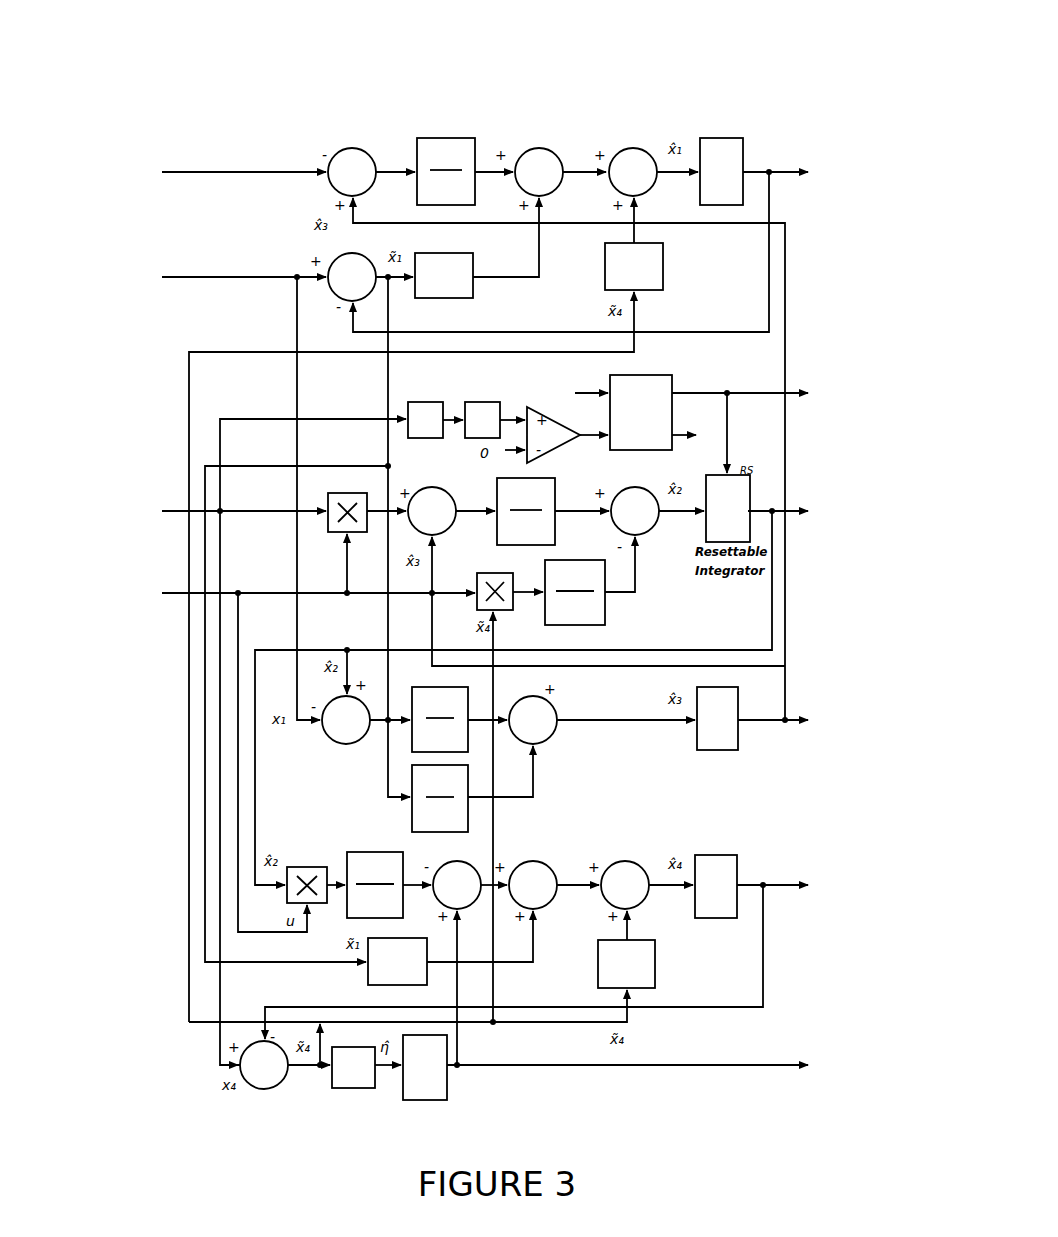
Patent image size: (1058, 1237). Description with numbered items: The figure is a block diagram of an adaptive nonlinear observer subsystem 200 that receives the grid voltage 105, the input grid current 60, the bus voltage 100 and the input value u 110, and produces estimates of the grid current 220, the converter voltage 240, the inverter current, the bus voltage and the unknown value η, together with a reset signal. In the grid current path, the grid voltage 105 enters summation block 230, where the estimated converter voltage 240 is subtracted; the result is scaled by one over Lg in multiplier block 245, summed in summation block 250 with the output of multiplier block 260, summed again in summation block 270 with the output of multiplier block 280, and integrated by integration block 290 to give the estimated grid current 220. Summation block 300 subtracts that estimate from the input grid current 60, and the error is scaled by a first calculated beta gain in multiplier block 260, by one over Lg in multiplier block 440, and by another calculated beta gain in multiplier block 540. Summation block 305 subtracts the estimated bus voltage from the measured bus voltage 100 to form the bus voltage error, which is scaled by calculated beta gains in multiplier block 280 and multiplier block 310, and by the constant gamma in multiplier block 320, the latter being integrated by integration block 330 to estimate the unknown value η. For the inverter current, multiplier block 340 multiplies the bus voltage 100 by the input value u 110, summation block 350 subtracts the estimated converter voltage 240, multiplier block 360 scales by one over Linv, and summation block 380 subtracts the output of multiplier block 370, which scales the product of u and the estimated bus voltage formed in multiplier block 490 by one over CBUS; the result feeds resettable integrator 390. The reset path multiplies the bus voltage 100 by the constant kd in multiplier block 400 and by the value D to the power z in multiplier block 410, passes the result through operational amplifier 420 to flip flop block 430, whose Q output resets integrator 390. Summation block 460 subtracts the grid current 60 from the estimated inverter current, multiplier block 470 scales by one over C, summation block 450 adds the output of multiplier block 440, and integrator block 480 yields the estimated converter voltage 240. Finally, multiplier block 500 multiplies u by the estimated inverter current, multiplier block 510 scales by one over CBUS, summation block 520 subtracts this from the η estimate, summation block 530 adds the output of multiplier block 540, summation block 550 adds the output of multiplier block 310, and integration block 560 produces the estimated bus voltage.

The adaptive nonlinear observer subsystem 200 is at (152, 126).
The grid voltage 105 is at (138, 172).
The input grid current 60 is at (130, 270).
The bus voltage 100 is at (138, 502).
The input value u 110 is at (142, 612).
The summation block 230 is at (350, 146).
The multiplier block 245 is at (432, 140).
The summation block 250 is at (532, 150).
The summation block 270 is at (624, 148).
The integration block 290 is at (716, 138).
The estimated value for the grid current 220 is at (834, 160).
The summation block 300 is at (330, 290).
The multiplier block 260 is at (478, 296).
The multiplier block 280 is at (668, 272).
The multiplier block 400 is at (405, 414).
The multiplier block 410 is at (476, 400).
The operational amplifier 420 is at (570, 420).
The flip flop block 430 is at (676, 378).
The multiplier block 340 is at (345, 490).
The summation block 350 is at (420, 490).
The multiplier block 360 is at (558, 486).
The summation block 380 is at (648, 540).
The resettable integrator 390 is at (756, 490).
The multiplier block 490 is at (480, 570).
The multiplier block 370 is at (610, 616).
The summation block 460 is at (334, 746).
The multiplier block 470 is at (412, 686).
The summation block 450 is at (560, 732).
The integrator block 480 is at (742, 746).
The estimated value for the converter voltage 240 is at (838, 708).
The multiplier block 440 is at (474, 822).
The multiplier block 500 is at (308, 866).
The multiplier block 510 is at (368, 852).
The summation block 520 is at (470, 860).
The summation block 530 is at (548, 864).
The summation block 550 is at (630, 862).
The integration block 560 is at (716, 854).
The multiplier block 540 is at (364, 976).
The multiplier block 310 is at (660, 964).
The summation block 305 is at (265, 1092).
The multiplier block 320 is at (352, 1092).
The integration block 330 is at (450, 1094).